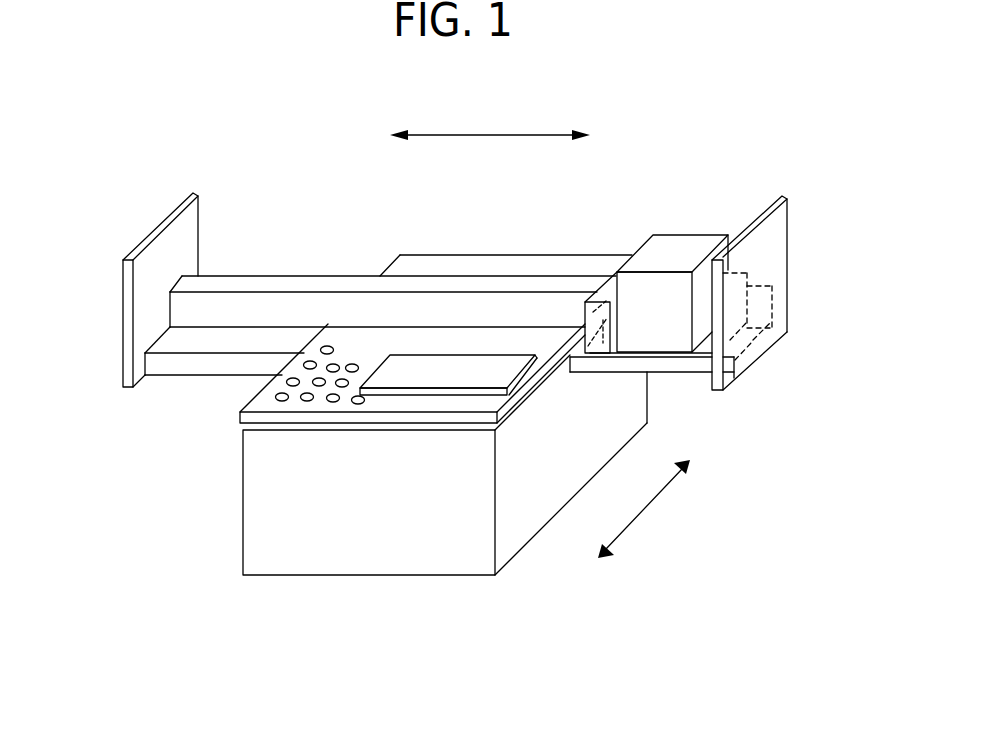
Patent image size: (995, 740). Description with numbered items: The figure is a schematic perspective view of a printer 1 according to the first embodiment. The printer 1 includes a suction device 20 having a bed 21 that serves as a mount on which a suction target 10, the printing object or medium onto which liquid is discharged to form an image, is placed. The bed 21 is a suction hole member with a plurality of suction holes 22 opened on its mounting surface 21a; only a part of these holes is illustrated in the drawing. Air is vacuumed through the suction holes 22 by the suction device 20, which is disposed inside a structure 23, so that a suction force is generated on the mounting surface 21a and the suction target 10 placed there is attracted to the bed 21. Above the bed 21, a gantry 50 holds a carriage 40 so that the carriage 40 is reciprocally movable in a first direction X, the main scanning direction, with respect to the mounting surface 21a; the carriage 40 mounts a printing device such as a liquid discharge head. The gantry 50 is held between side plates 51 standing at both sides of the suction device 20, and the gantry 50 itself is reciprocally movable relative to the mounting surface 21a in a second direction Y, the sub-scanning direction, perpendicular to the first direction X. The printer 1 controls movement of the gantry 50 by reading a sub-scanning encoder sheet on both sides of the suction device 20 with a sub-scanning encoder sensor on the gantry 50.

The printer 1 is at (96, 150).
The suction target 10 is at (432, 373).
The suction device 20 is at (236, 527).
The bed 21 is at (443, 420).
The mounting surface 21a is at (273, 407).
The suction holes 22 is at (292, 377).
The structure 23 is at (345, 548).
The carriage 40 is at (653, 258).
The gantry 50 is at (342, 308).
The side plates 51 is at (158, 226).